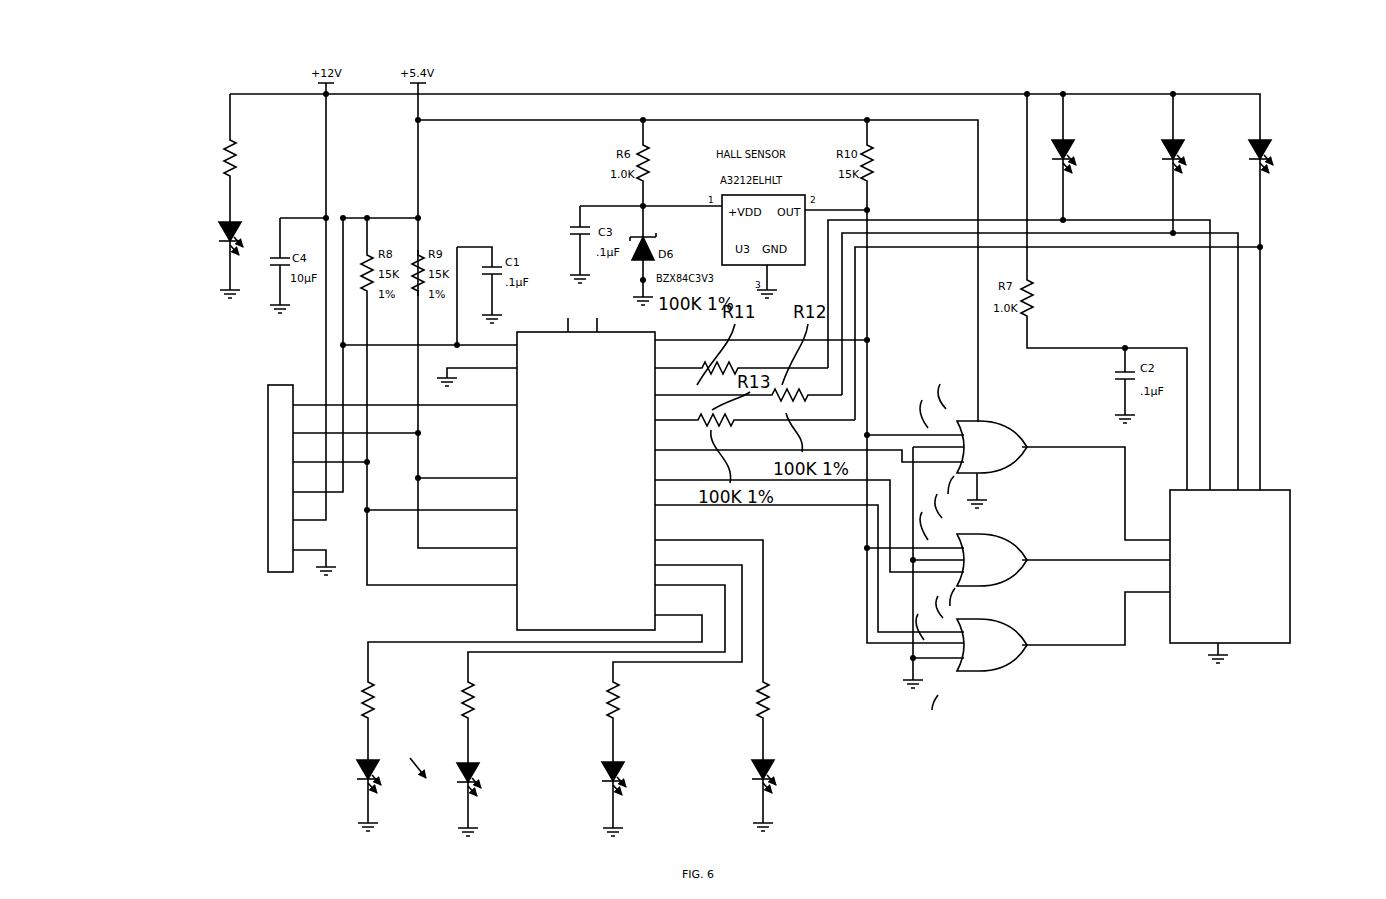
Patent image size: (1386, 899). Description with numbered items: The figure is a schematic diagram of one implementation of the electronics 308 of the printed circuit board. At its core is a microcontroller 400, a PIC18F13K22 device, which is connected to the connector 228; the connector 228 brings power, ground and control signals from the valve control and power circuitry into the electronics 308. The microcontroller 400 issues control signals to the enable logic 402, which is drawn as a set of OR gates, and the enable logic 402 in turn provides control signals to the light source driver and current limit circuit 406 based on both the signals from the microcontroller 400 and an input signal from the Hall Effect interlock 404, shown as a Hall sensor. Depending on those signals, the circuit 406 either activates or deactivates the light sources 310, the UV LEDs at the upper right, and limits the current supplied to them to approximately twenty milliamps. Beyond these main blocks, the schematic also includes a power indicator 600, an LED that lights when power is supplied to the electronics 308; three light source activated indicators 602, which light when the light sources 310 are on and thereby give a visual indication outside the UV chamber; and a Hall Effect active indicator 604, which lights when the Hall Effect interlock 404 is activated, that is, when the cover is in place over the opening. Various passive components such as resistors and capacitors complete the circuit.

The connector 228 is at (265, 508).
The electronics 308 is at (1096, 274).
The light sources 310 is at (1282, 208).
The microcontroller 400 is at (552, 310).
The enable logic 402 is at (1132, 648).
The Hall Effect interlock 404 is at (782, 118).
The light source driver/current limit circuit 406 is at (1275, 648).
The power indicator 600 is at (197, 285).
The light source activated indicators 602 is at (257, 786).
The Hall Effect active indicator 604 is at (858, 800).